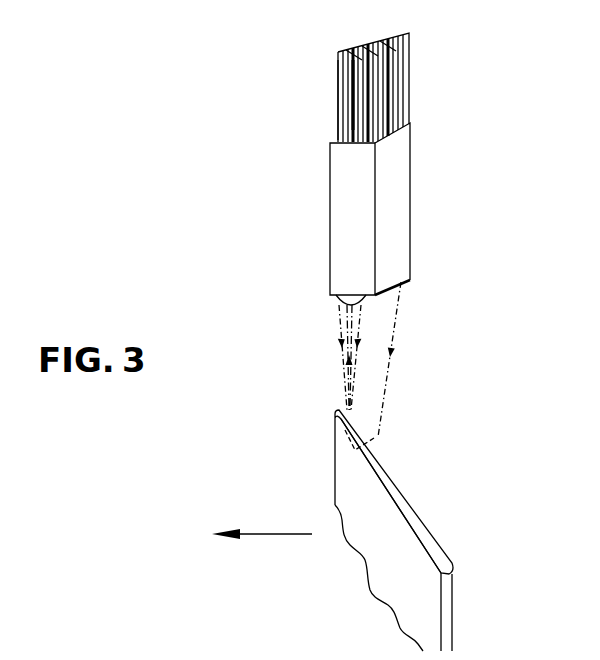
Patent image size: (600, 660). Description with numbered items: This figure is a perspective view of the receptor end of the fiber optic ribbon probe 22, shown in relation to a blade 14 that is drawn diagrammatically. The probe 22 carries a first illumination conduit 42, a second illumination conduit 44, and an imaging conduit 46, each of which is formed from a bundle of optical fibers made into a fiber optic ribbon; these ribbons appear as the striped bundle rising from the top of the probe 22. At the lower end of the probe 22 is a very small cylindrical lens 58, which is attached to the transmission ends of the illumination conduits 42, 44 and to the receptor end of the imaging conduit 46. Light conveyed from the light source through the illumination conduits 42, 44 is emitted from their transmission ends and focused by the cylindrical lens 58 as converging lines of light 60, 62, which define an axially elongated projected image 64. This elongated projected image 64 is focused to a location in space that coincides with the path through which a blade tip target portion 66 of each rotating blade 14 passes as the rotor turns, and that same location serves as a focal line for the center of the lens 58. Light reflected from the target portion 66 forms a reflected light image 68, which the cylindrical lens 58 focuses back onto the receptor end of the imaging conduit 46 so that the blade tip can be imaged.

The blade 14 is at (448, 598).
The probe 22 is at (330, 215).
The first illumination conduit 42 is at (408, 76).
The second illumination conduit 44 is at (338, 100).
The imaging conduit 46 is at (350, 70).
The cylindrical lens 58 is at (340, 302).
The converging line of light 60 is at (357, 368).
The converging line of light 62 is at (340, 355).
The elongated projected image 64 is at (380, 447).
The blade tip target portion 66 is at (412, 520).
The reflected light image 68 is at (365, 330).